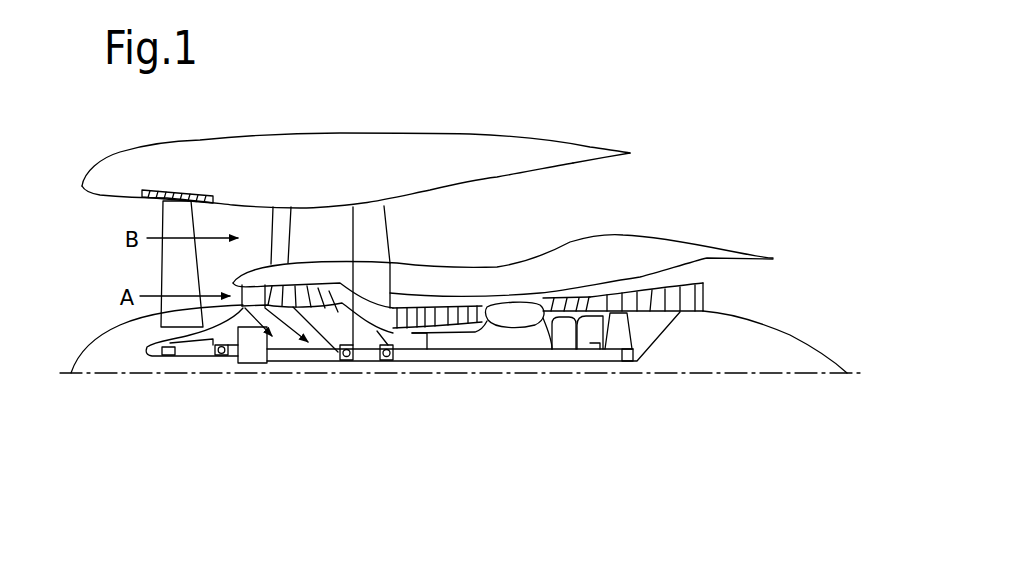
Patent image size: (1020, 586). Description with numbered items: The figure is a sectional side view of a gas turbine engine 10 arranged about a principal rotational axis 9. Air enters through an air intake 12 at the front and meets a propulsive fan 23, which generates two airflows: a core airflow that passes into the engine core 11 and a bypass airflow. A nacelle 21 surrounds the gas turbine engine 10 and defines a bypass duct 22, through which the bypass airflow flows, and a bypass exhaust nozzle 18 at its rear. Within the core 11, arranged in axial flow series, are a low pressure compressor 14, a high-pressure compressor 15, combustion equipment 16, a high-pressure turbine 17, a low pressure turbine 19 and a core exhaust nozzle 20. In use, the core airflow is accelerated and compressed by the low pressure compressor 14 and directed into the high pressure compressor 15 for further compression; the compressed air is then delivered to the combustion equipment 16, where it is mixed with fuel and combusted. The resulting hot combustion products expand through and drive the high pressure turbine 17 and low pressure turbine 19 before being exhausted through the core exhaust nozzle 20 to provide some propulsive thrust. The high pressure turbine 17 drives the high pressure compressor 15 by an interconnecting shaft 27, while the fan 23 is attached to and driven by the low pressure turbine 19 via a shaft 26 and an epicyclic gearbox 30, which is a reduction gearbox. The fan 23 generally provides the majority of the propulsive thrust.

The principal rotational axis 9 is at (683, 377).
The gas turbine engine 10 is at (142, 149).
The core 11 is at (497, 277).
The air intake 12 is at (92, 229).
The low pressure compressor 14 is at (317, 283).
The high-pressure compressor 15 is at (442, 318).
The combustion equipment 16 is at (520, 318).
The high-pressure turbine 17 is at (568, 304).
The bypass exhaust nozzle 18 is at (690, 192).
The low pressure turbine 19 is at (690, 276).
The core exhaust nozzle 20 is at (752, 297).
The nacelle 21 is at (376, 151).
The bypass duct 22 is at (583, 205).
The propulsive fan 23 is at (165, 268).
The shaft 26 is at (443, 362).
The interconnecting shaft 27 is at (478, 351).
The epicyclic gearbox 30 is at (252, 349).